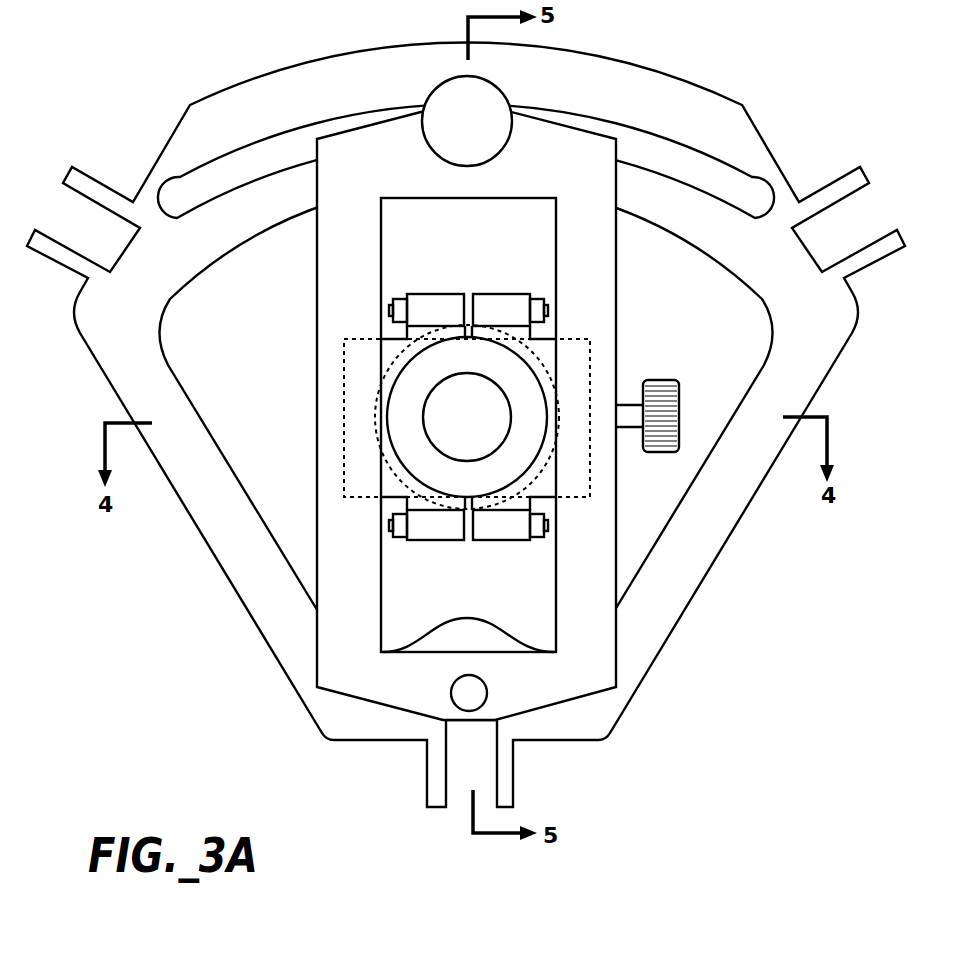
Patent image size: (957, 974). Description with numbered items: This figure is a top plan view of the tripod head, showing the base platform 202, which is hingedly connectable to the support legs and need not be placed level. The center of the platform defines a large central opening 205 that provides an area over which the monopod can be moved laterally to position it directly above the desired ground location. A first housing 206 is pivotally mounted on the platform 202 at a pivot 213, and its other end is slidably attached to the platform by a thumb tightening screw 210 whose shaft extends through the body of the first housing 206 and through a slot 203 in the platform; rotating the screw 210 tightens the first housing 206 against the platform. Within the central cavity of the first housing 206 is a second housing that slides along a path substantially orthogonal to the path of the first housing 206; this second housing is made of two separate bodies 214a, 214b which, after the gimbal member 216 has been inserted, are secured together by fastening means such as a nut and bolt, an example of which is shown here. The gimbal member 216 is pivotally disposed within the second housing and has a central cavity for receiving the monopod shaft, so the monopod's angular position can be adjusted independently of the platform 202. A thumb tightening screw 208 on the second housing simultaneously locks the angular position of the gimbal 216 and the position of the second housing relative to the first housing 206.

The base platform 202 is at (223, 537).
The slot 203 is at (737, 175).
The central opening 205 is at (642, 527).
The first housing 206 is at (605, 655).
The thumb tightening screw 208 is at (662, 380).
The thumb tightening screw 210 is at (460, 103).
The pivot 213 is at (470, 695).
The second housing body 214a is at (547, 350).
The second housing body 214b is at (393, 353).
The gimbal member 216 is at (438, 477).